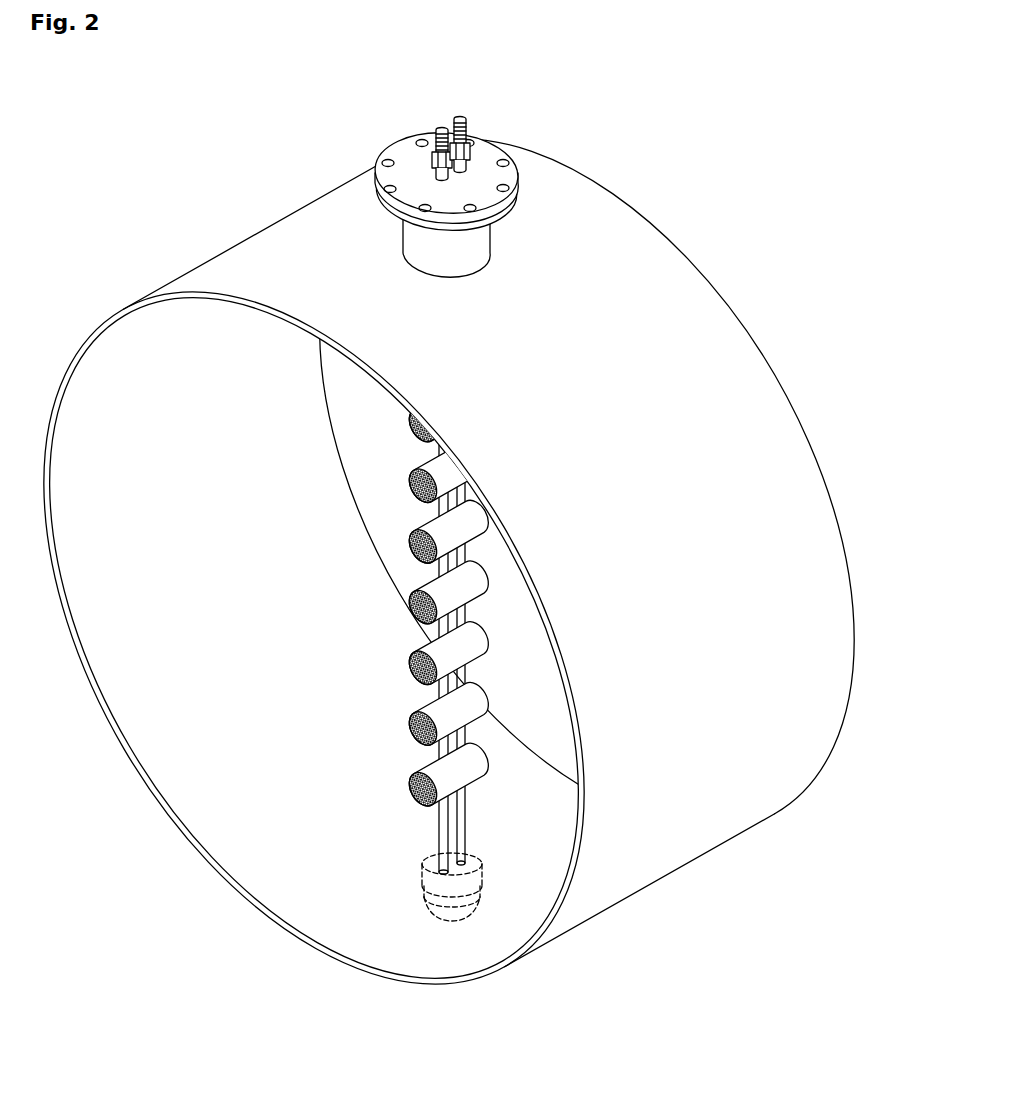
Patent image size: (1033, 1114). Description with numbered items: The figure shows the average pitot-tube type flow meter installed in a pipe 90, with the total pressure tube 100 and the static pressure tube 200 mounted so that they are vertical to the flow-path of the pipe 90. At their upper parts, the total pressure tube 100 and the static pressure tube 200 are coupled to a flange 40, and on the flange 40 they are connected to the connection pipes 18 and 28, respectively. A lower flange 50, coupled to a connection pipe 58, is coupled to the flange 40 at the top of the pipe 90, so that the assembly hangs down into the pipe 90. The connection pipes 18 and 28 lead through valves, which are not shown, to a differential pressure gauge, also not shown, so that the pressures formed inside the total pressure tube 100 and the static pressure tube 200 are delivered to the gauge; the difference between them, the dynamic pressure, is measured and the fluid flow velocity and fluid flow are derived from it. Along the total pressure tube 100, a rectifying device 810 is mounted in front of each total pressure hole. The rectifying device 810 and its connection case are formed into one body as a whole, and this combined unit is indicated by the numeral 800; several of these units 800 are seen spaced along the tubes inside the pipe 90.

The connection pipe 18 is at (441, 128).
The connection pipe 28 is at (458, 117).
The flange 40 is at (494, 150).
The lower flange 50 is at (503, 221).
The connection pipe 58 is at (479, 255).
The pipe 90 is at (283, 228).
The total pressure tube 100 is at (440, 568).
The static pressure tube 200 is at (466, 678).
The rectifying device and connection case body 800 is at (474, 642).
The rectifying device 810 is at (412, 669).